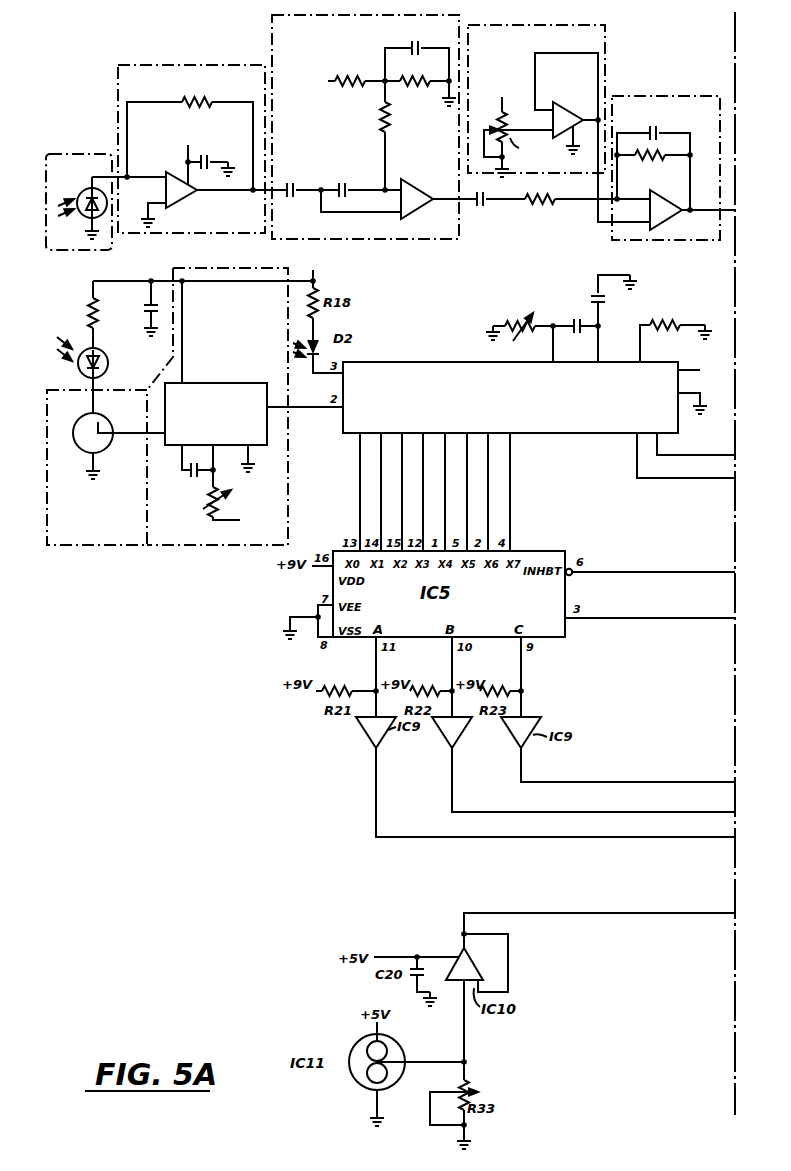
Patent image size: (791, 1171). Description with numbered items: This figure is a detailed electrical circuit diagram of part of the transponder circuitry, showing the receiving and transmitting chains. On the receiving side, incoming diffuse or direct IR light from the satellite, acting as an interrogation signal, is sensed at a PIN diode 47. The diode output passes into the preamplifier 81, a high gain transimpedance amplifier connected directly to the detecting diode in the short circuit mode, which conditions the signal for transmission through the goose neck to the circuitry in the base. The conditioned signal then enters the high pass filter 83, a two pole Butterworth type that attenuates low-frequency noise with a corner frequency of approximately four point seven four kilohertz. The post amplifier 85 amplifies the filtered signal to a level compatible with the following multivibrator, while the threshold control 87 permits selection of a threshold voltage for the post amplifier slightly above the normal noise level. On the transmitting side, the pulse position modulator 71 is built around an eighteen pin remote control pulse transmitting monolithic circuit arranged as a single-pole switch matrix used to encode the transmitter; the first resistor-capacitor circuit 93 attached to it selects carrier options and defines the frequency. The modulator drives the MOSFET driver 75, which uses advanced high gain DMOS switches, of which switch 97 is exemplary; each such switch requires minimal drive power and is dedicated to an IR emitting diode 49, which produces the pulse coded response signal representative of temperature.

The PIN diode 47 is at (95, 154).
The preamplifier 81 is at (155, 91).
The high pass filter 83 is at (318, 43).
The threshold control 87 is at (510, 51).
The post amplifier 85 is at (708, 111).
The IR emitting diode 49 is at (111, 363).
The MOSFET driver 75 is at (127, 534).
The DMOS switch 97 is at (79, 447).
The first resistor-capacitor circuit 93 is at (556, 300).
The pulse position modulator 71 is at (582, 476).